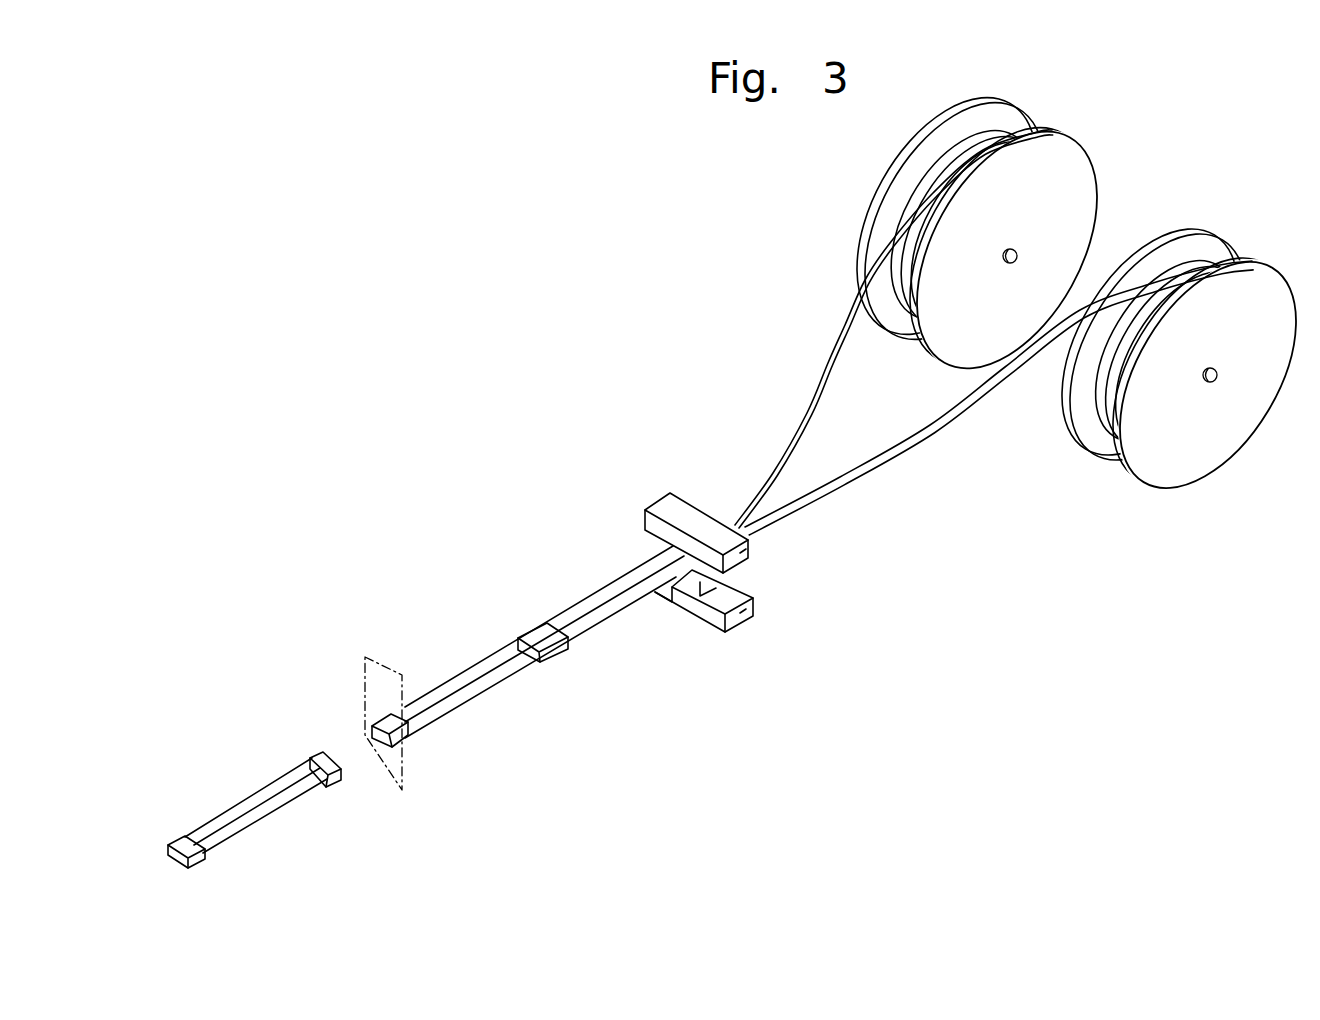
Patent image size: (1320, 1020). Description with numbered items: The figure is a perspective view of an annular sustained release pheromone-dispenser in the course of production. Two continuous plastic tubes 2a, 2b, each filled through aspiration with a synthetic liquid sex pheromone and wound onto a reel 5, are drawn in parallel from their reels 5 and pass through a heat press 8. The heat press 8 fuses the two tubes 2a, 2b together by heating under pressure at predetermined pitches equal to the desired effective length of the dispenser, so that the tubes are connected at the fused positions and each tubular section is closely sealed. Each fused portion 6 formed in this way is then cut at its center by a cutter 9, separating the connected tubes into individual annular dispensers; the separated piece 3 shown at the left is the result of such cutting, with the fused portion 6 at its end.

The continuous plastic tube 2a is at (829, 363).
The continuous plastic tube 2b is at (923, 435).
The reel 5 is at (1065, 190).
The heat press 8 is at (807, 587).
The fused portion 6 is at (543, 637).
The cutter 9 is at (365, 657).
The cut wire piece 3 is at (180, 843).